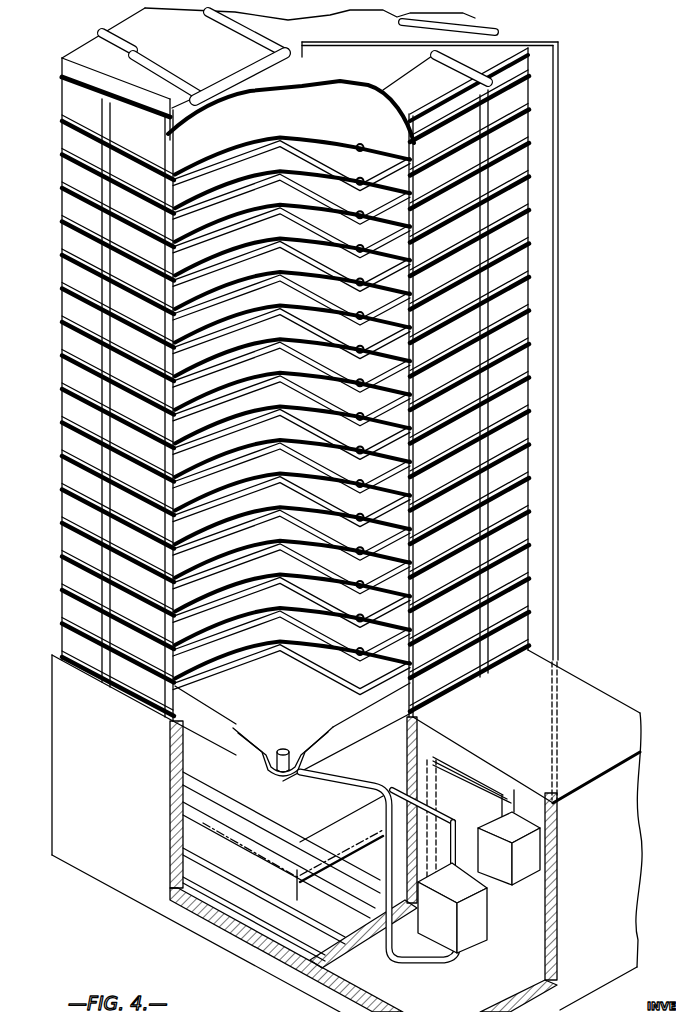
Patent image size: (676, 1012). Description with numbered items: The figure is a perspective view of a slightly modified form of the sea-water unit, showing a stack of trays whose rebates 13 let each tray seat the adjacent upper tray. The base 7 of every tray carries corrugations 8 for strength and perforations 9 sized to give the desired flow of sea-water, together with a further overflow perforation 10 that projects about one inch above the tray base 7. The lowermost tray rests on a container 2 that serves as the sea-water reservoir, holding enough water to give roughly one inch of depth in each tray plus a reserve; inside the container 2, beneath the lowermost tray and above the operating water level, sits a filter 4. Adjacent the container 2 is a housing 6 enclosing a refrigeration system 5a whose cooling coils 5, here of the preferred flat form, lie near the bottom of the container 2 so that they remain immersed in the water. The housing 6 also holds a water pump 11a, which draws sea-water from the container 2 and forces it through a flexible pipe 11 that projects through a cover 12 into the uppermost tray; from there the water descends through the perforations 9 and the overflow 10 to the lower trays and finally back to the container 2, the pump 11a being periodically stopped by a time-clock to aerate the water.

The container 2 is at (67, 855).
The filter 4 is at (248, 842).
The cooling coils 5 is at (203, 877).
The refrigeration system 5a is at (527, 868).
The housing 6 is at (605, 693).
The tray base 7 is at (289, 472).
The corrugations 8 is at (167, 38).
The perforations 9 is at (370, 220).
The overflow perforation 10 is at (283, 748).
The flexible pipe 11 is at (565, 117).
The water pump 11a is at (473, 922).
The cover 12 is at (512, 33).
The rebates 13 is at (530, 312).